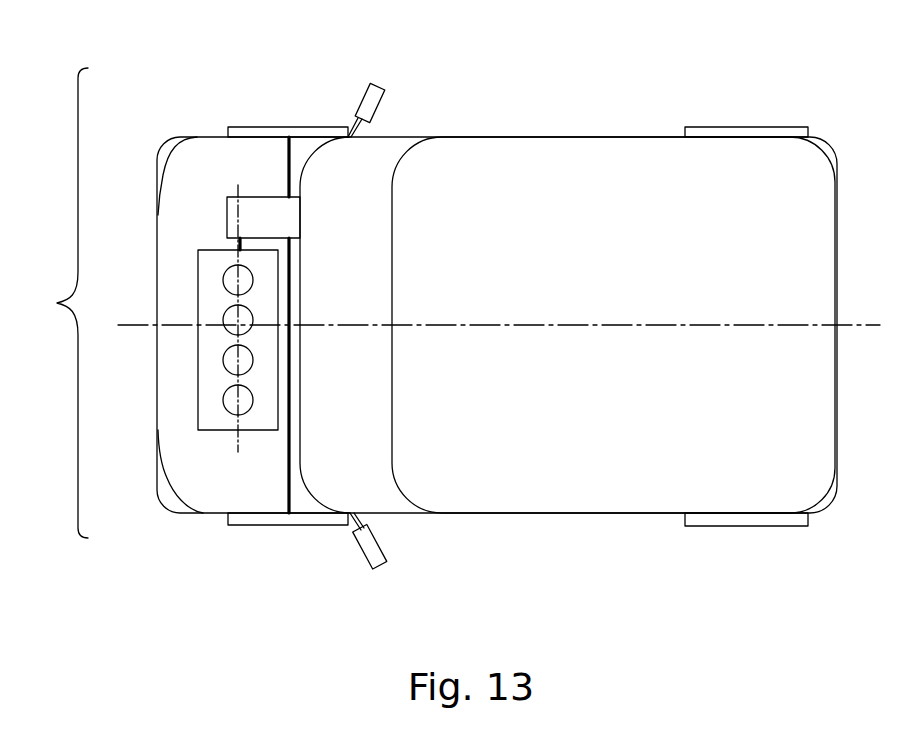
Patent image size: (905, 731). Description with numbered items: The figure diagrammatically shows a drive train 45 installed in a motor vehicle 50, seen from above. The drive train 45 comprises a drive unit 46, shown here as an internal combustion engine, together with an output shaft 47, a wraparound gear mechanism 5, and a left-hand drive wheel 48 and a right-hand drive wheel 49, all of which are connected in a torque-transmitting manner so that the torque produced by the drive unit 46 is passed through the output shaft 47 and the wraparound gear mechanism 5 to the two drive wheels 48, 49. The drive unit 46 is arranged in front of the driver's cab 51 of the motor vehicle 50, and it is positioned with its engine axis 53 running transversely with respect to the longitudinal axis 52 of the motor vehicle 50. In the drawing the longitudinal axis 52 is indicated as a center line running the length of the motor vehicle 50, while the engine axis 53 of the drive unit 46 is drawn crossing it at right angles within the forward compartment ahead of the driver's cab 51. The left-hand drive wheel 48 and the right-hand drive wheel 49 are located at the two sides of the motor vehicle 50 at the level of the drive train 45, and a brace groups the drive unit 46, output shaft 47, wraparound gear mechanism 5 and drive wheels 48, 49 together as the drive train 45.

The wraparound gear mechanism 5 is at (227, 213).
The drive train 45 is at (55, 303).
The drive unit 46 is at (198, 404).
The output shaft 47 is at (216, 250).
The left-hand drive wheel 48 is at (228, 518).
The right-hand drive wheel 49 is at (233, 125).
The motor vehicle 50 is at (659, 84).
The driver's cab 51 is at (493, 170).
The longitudinal axis 52 is at (612, 325).
The engine axis 53 is at (238, 450).